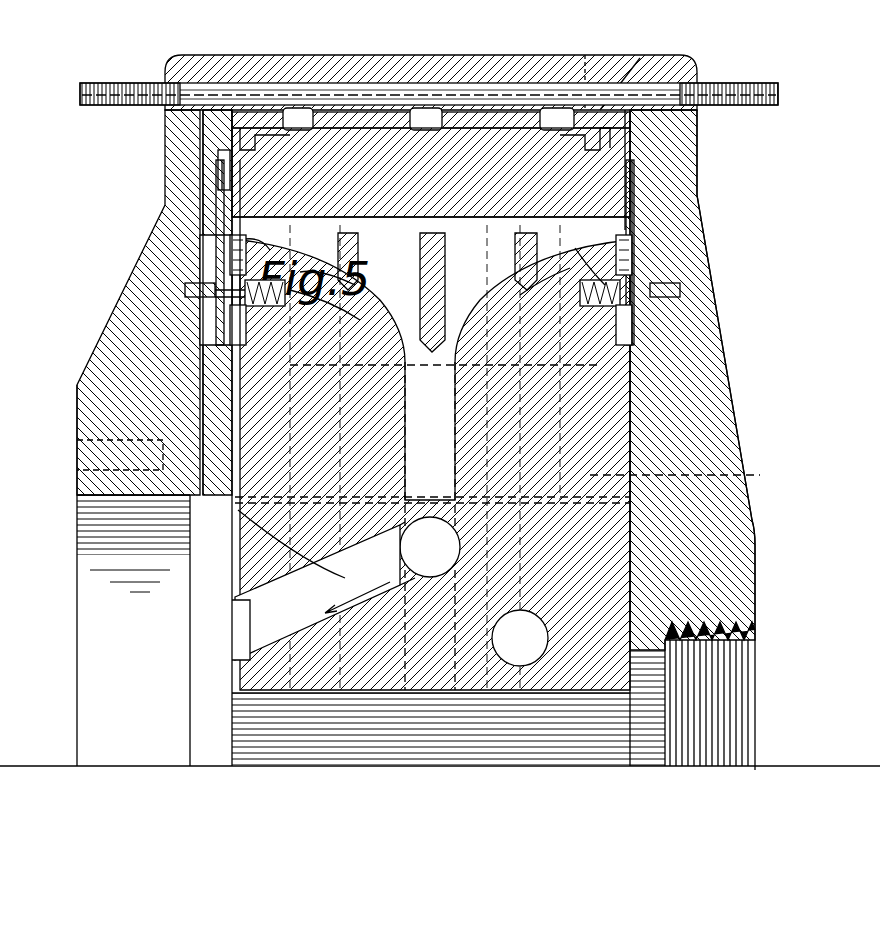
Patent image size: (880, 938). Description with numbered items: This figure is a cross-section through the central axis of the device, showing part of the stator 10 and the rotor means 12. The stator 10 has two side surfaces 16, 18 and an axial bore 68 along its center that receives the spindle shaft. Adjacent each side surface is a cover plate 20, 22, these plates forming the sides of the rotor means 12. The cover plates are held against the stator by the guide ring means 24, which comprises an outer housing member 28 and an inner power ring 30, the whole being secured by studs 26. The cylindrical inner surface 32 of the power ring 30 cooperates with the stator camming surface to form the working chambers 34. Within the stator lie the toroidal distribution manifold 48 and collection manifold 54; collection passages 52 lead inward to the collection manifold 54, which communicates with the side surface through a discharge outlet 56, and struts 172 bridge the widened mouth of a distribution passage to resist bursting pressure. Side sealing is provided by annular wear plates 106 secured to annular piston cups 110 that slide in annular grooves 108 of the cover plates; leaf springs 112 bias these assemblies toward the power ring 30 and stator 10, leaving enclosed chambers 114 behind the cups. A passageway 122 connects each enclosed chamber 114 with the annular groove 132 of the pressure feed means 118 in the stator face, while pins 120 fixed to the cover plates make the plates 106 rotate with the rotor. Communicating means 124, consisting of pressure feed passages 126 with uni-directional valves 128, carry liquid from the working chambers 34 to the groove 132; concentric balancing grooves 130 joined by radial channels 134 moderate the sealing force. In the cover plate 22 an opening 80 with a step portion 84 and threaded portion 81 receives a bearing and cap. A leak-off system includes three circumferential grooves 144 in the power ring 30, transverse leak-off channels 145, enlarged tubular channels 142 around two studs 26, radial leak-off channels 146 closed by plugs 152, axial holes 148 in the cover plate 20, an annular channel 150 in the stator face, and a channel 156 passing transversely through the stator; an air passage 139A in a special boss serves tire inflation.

The stator 10 is at (600, 428).
The rotor means 12 is at (776, 553).
The side surface 16 is at (232, 424).
The side surface 18 is at (640, 392).
The cover plate 20 is at (110, 345).
The cover plate 22 is at (715, 362).
The guide ring means 24 is at (587, 54).
The stud 26 is at (760, 82).
The housing member 28 is at (408, 66).
The power ring 30 is at (258, 136).
The cylindrical inner surface 32 is at (502, 218).
The working chamber 34 is at (362, 222).
The distribution manifold 48 is at (520, 638).
The collection passage 52 is at (432, 457).
The collection manifold 54 is at (430, 547).
The discharge outlet 56 is at (323, 591).
The axial bore 68 is at (293, 752).
The opening 80 is at (725, 746).
The threaded portion 81 is at (720, 632).
The step portion 84 is at (700, 650).
The annular wear plate 106 is at (262, 178).
The annular groove 108 is at (220, 172).
The annular piston cup 110 is at (222, 160).
The leaf spring 112 is at (218, 210).
The enclosed chamber 114 is at (230, 235).
The pressure feed means 118 is at (635, 276).
The pin 120 is at (190, 290).
The passageway 122 is at (230, 300).
The communicating means 124 is at (330, 283).
The pressure feed passage 126 is at (338, 300).
The uni-directional valve 128 is at (340, 325).
The balancing groove 130 is at (276, 236).
The annular groove 132 is at (240, 305).
The radially extending channel 134 is at (640, 323).
The air passage 139A is at (618, 50).
The tubular channel 142 is at (505, 86).
The circumferential groove 144 is at (298, 118).
The transverse leak-off channel 145 is at (625, 135).
The radial leak-off channel 146 is at (205, 396).
The axial hole 148 is at (215, 507).
The annular channel 150 is at (314, 561).
The plug 152 is at (212, 60).
The channel 156 is at (691, 474).
The strut 172 is at (420, 268).